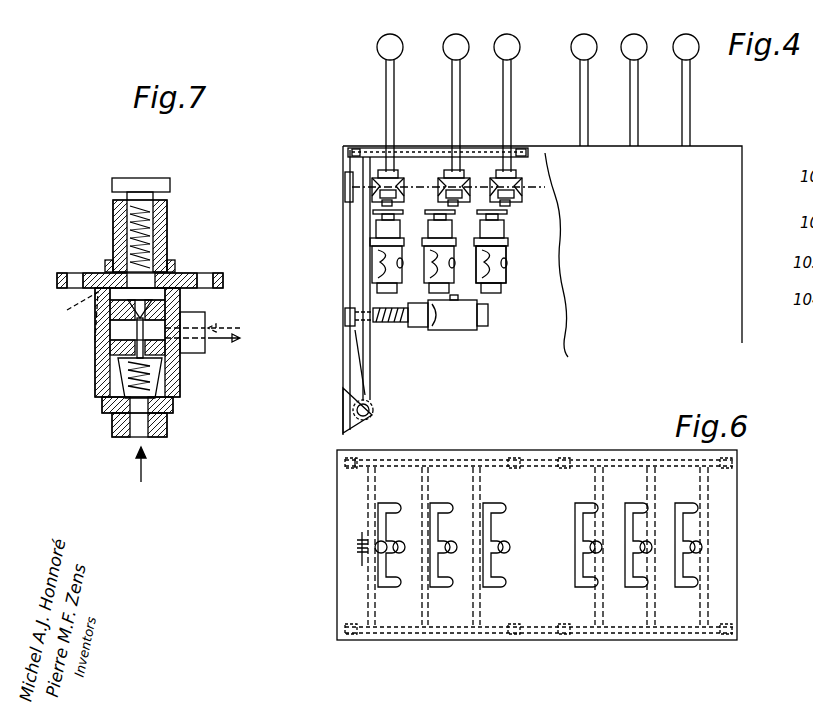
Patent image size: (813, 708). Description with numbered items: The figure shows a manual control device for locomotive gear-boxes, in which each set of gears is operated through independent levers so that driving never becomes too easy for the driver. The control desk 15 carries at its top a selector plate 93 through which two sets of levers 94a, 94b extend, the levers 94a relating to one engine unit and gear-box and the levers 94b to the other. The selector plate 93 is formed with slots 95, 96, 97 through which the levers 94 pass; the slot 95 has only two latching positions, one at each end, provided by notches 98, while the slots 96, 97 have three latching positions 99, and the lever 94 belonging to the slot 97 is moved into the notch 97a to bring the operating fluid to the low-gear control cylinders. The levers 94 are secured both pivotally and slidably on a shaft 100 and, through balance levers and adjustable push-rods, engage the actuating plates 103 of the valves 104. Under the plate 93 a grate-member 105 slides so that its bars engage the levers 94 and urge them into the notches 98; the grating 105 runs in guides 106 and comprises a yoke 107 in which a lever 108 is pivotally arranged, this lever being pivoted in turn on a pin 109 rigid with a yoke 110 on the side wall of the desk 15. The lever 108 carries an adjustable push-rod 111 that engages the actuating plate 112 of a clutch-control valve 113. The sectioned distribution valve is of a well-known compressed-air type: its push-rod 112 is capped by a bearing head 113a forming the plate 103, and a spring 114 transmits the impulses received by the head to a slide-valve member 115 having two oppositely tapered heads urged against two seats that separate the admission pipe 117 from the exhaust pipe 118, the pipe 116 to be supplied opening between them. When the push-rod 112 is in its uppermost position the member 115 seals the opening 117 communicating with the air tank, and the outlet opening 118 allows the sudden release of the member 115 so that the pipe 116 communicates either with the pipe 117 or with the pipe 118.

In FIG. 4, the control desk 15 is at (708, 222).
In FIG. 6, the selector plate 93 is at (723, 540).
In FIG. 6, the lever 94 is at (381, 550).
In FIG. 4, the lever 94a is at (508, 100).
In FIG. 4, the lever 94b is at (686, 102).
In FIG. 6, the slot 95 is at (382, 505).
In FIG. 6, the slot 96 is at (437, 520).
In FIG. 6, the slot 97 is at (487, 505).
In FIG. 6, the notch 97a is at (500, 503).
In FIG. 6, the notch 98 is at (400, 550).
In FIG. 6, the latching position 99 is at (448, 587).
In FIG. 4, the shaft 100 is at (418, 185).
In FIG. 4, the actuating plate 103 is at (508, 212).
In FIG. 4, the valve 104 is at (492, 277).
In FIG. 6, the grate-member 105 is at (378, 595).
In FIG. 4, the guide 106 is at (517, 150).
In FIG. 6, the guide 106 is at (356, 460).
In FIG. 6, the yoke 107 is at (360, 540).
In FIG. 4, the lever 108 is at (368, 210).
In FIG. 6, the lever 108 is at (362, 548).
In FIG. 4, the pin 109 is at (356, 412).
In FIG. 4, the yoke 110 is at (356, 401).
In FIG. 4, the adjustable push-rod 111 is at (350, 320).
In FIG. 7, the push-rod 112 is at (168, 215).
In FIG. 4, the push-rod 112 is at (404, 325).
In FIG. 4, the clutch-control valve 113 is at (455, 320).
In FIG. 7, the bearing head 113a is at (150, 186).
In FIG. 7, the spring 114 is at (168, 250).
In FIG. 7, the slide-valve member 115 is at (195, 272).
In FIG. 7, the pipe to be supplied 116 is at (205, 352).
In FIG. 7, the admission pipe 117 is at (143, 427).
In FIG. 7, the exhaust pipe 118 is at (83, 328).